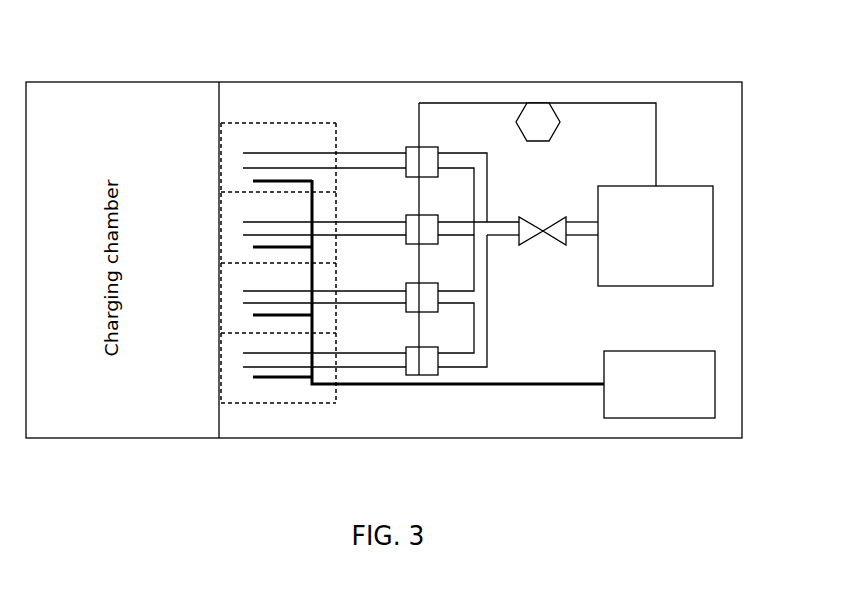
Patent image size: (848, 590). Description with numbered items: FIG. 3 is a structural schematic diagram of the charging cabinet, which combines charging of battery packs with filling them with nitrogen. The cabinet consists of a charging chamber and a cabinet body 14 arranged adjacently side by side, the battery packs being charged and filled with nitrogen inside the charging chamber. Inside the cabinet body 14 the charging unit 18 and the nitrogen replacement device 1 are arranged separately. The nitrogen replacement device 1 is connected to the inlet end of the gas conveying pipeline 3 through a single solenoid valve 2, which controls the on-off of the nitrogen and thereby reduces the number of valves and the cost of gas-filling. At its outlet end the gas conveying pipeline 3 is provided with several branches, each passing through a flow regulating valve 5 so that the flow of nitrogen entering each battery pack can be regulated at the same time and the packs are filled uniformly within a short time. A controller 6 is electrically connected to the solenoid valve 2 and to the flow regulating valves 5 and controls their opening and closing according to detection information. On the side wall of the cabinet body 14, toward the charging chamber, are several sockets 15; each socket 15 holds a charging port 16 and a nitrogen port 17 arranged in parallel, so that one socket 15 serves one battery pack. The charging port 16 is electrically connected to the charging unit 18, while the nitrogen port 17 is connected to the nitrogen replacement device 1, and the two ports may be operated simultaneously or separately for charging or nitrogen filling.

The nitrogen replacement device 1 is at (698, 240).
The solenoid valve 2 is at (543, 231).
The gas conveying pipeline 3 is at (502, 237).
The flow regulating valve 5 is at (413, 368).
The controller 6 is at (531, 123).
The cabinet body 14 is at (708, 115).
The socket 15 is at (260, 128).
The charging port 16 is at (288, 376).
The nitrogen port 17 is at (243, 358).
The charging unit 18 is at (637, 399).